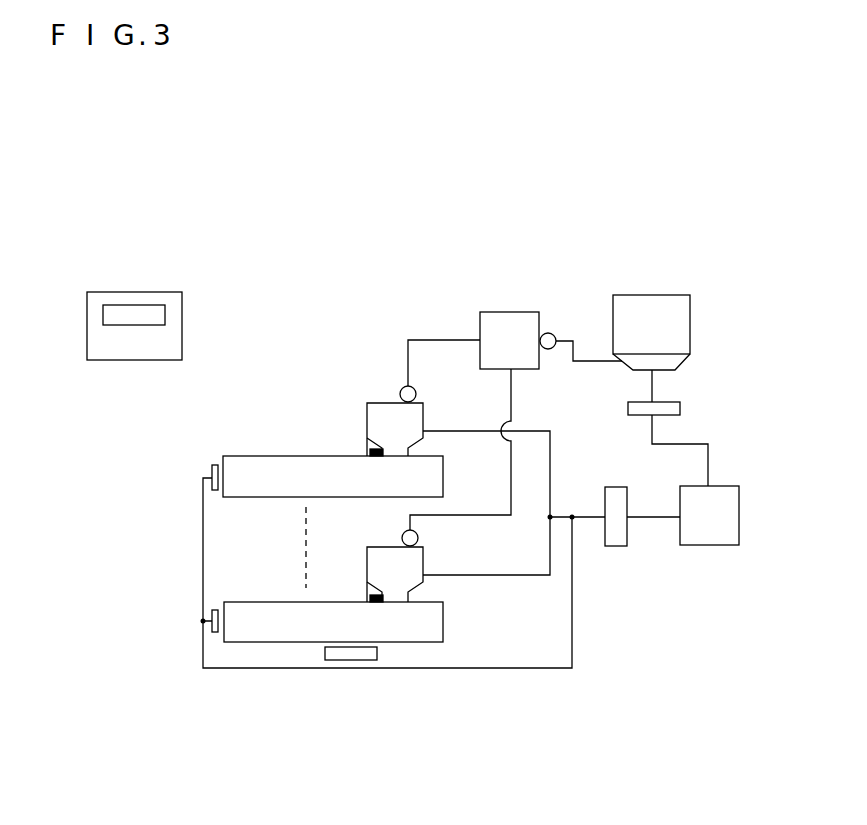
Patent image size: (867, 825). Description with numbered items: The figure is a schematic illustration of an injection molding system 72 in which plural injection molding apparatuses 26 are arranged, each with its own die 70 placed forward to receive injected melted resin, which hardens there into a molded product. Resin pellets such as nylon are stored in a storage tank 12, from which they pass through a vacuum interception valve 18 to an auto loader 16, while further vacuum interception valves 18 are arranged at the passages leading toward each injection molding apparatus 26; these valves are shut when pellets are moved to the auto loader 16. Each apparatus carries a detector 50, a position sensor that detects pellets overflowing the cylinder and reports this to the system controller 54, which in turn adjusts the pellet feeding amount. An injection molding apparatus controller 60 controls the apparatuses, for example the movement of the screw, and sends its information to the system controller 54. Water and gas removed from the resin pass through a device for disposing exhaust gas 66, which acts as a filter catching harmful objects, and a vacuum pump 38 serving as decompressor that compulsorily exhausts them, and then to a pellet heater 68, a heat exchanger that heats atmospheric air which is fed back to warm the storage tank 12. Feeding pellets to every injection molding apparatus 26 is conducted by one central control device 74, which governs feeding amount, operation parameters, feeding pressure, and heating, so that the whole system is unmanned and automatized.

The storage tank 12 is at (662, 295).
The auto loader 16 is at (510, 312).
The vacuum interception valve 18 is at (402, 388).
The injection molding apparatus 26 is at (268, 456).
The vacuum pump 38 is at (706, 545).
The detector 50 is at (370, 450).
The system controller 54 is at (165, 313).
The injection molding apparatus controller 60 is at (352, 660).
The device for disposing exhaust gas 66 is at (616, 546).
The pellet heater 68 is at (680, 406).
The die 70 is at (212, 470).
The injection molding system 72 is at (294, 373).
The central control device 74 is at (128, 360).